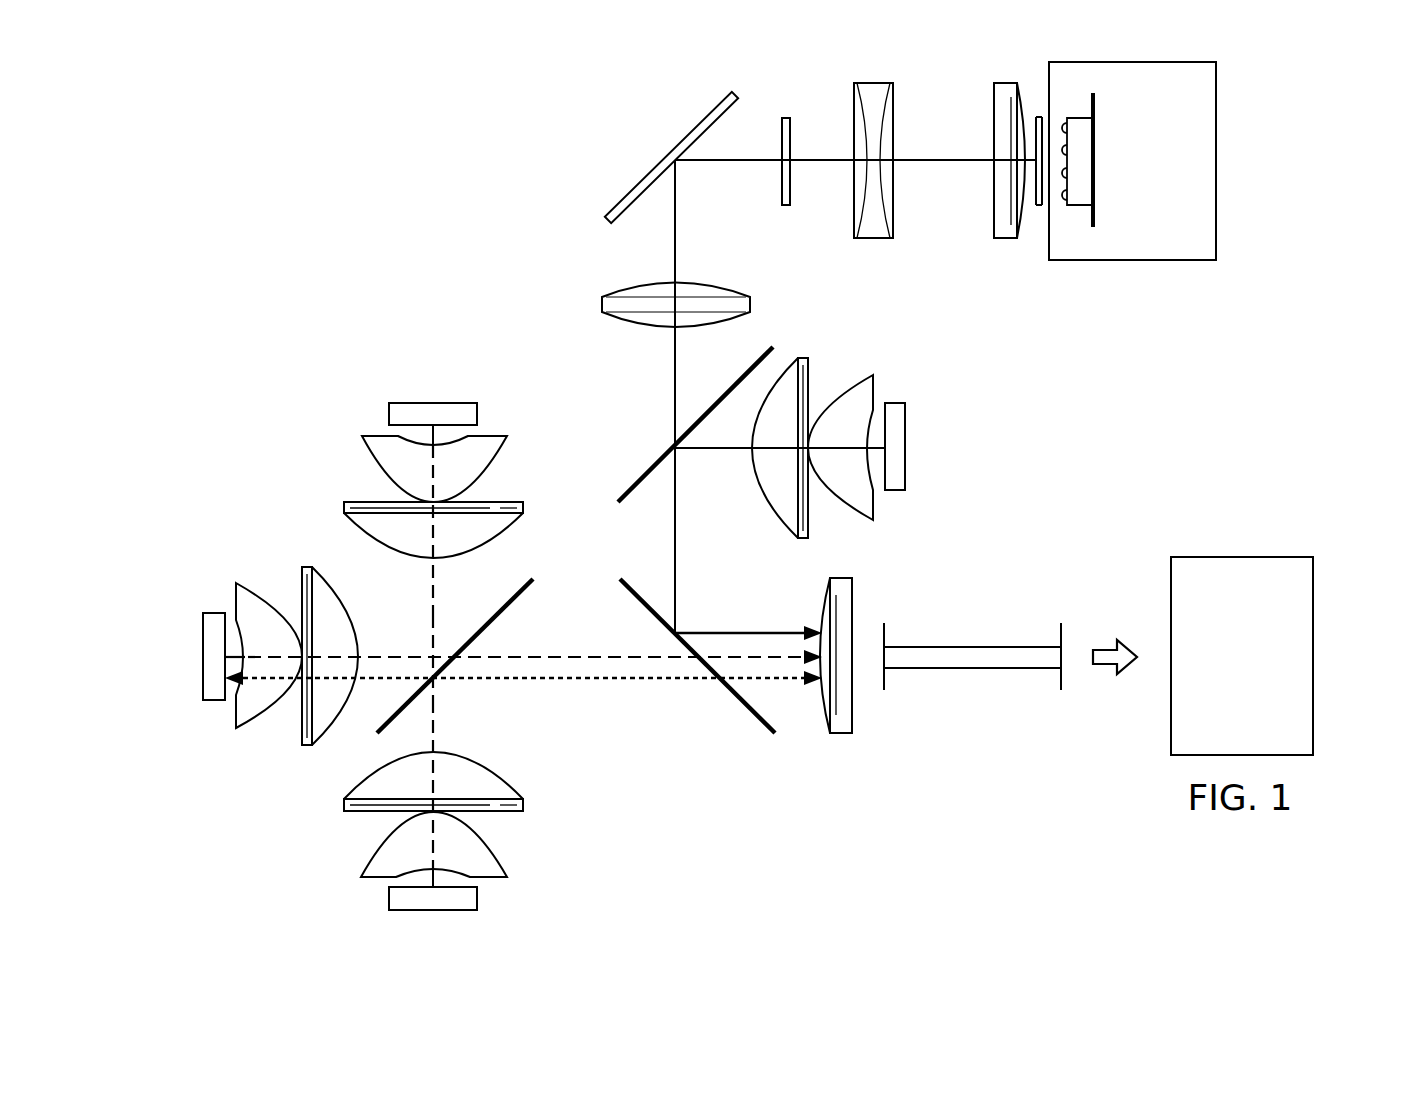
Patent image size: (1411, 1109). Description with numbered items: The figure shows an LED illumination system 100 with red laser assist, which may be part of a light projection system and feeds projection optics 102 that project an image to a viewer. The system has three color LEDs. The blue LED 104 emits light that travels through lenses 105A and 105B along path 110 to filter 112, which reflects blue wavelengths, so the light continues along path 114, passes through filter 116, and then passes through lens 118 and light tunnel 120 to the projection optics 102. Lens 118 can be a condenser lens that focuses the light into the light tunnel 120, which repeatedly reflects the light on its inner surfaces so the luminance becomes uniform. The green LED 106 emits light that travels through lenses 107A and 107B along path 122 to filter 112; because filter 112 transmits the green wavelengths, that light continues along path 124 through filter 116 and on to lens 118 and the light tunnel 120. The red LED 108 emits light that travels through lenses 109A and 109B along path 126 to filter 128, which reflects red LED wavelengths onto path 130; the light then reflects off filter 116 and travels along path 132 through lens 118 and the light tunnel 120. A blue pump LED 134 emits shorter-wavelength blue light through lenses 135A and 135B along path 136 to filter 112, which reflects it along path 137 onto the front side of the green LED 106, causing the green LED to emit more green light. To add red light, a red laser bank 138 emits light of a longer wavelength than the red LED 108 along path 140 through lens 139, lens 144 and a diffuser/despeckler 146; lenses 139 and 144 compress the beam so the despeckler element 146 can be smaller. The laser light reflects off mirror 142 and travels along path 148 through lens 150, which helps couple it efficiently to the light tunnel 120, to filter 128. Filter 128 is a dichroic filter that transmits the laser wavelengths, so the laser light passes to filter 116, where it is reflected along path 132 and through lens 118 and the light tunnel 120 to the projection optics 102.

The LED illumination system 100 is at (503, 127).
The projection optics 102 is at (1313, 657).
The blue LED 104 is at (389, 900).
The lens 105A is at (362, 867).
The lens 105B is at (345, 805).
The green LED 106 is at (203, 667).
The lens 107A is at (238, 729).
The lens 107B is at (305, 747).
The red LED 108 is at (908, 433).
The lens 109A is at (866, 376).
The lens 109B is at (803, 358).
The path 110 is at (435, 707).
The filter 112 is at (497, 612).
The path 114 is at (602, 682).
The filter 116 is at (760, 720).
The lens 118 is at (855, 697).
The light tunnel 120 is at (973, 658).
The path 122 is at (403, 653).
The path 124 is at (587, 653).
The path 126 is at (716, 452).
The filter 128 is at (637, 480).
The path 130 is at (677, 538).
The path 132 is at (747, 632).
The blue pump LED 134 is at (389, 412).
The lens 135A is at (362, 445).
The lens 135B is at (345, 505).
The path 136 is at (432, 577).
The path 137 is at (377, 681).
The red laser bank 138 is at (1216, 150).
The lens 139 is at (1005, 81).
The path 140 is at (940, 158).
The mirror 142 is at (686, 137).
The lens 144 is at (875, 82).
The diffuser/despeckler 146 is at (787, 116).
The path 148 is at (677, 223).
The lens 150 is at (601, 300).